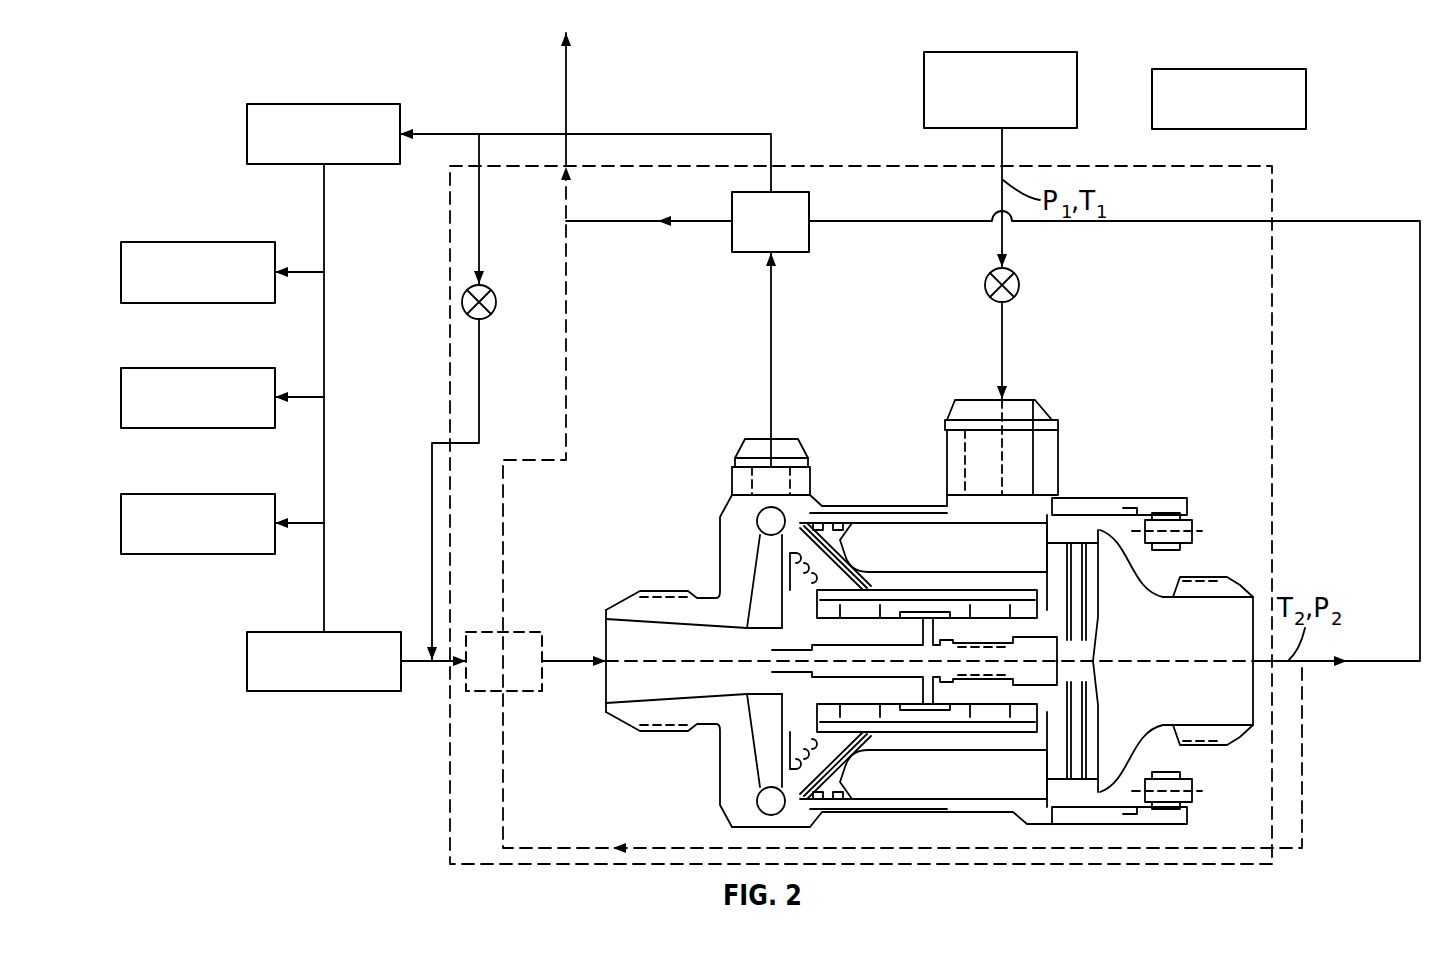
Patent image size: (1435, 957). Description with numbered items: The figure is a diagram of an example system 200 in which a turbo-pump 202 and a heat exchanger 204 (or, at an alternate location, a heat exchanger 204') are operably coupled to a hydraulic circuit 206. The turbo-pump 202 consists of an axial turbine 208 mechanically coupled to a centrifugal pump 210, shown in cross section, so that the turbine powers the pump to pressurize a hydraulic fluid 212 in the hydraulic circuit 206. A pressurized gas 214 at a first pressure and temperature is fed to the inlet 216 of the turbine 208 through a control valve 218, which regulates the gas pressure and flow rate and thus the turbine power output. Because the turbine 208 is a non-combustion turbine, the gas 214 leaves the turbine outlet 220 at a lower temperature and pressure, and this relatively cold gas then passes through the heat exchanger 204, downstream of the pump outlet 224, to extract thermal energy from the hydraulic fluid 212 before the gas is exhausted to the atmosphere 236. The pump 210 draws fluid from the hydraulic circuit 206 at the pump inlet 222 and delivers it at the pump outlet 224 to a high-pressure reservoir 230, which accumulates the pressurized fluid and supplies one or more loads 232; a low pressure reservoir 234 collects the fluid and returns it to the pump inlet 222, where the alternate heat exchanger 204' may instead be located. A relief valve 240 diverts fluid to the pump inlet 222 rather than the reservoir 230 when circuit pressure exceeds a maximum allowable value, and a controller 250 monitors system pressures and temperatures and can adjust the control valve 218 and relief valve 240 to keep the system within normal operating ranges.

The system 200 is at (685, 92).
The turbo-pump 202 is at (1245, 455).
The heat exchanger 204 is at (1076, 397).
The heat exchanger 204' is at (496, 698).
The hydraulic circuit 206 is at (183, 128).
The axial turbine 208 is at (1093, 480).
The centrifugal pump 210 is at (870, 490).
The hydraulic fluid 212 is at (494, 133).
The pressurized gas 214 is at (990, 50).
The inlet 216 is at (1045, 403).
The control valve 218 is at (1020, 285).
The turbine outlet 220 is at (1204, 705).
The pump inlet 222 is at (677, 695).
The pump outlet 224 is at (745, 448).
The high-pressure reservoir 230 is at (312, 104).
The loads 232 is at (98, 395).
The low pressure reservoir 234 is at (312, 692).
The atmosphere 236 is at (568, 80).
The relief valve 240 is at (460, 306).
The controller 250 is at (1240, 69).